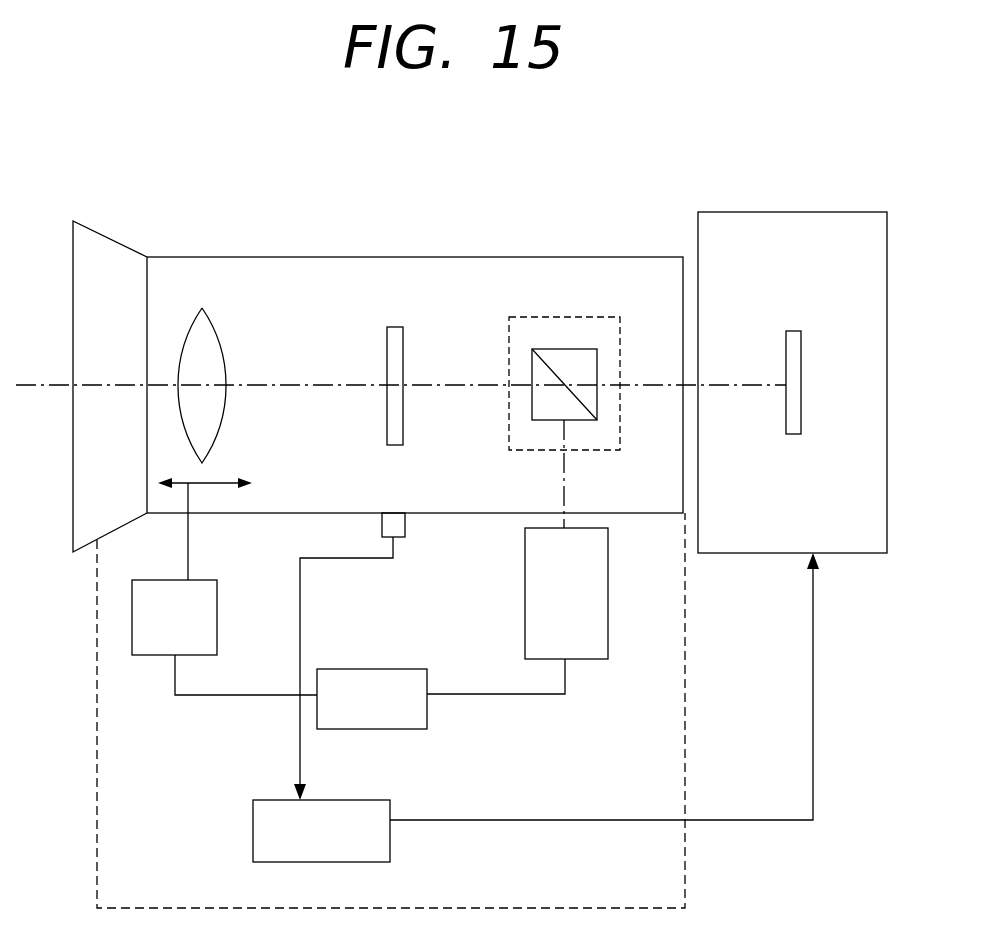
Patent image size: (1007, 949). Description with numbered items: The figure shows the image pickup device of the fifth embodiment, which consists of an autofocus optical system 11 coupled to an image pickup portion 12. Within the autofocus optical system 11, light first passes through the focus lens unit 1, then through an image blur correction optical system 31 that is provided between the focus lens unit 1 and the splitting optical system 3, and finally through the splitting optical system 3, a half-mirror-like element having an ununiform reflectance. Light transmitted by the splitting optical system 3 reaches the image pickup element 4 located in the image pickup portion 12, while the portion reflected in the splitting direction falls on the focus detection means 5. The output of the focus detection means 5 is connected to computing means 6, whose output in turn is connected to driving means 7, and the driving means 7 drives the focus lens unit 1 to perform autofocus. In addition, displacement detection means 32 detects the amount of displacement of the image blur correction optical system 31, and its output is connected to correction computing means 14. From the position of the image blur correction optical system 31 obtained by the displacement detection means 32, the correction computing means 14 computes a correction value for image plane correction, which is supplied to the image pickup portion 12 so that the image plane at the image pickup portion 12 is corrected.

The focus lens unit 1 is at (203, 346).
The splitting optical system 3 is at (568, 362).
The image pickup element 4 is at (797, 367).
The focus detection means 5 is at (588, 647).
The computing means 6 is at (365, 678).
The driving means 7 is at (152, 645).
The autofocus optical system 11 is at (333, 257).
The image pickup portion 12 is at (777, 212).
The correction computing means 14 is at (262, 832).
The image blur correction optical system 31 is at (397, 356).
The displacement detection means 32 is at (400, 527).